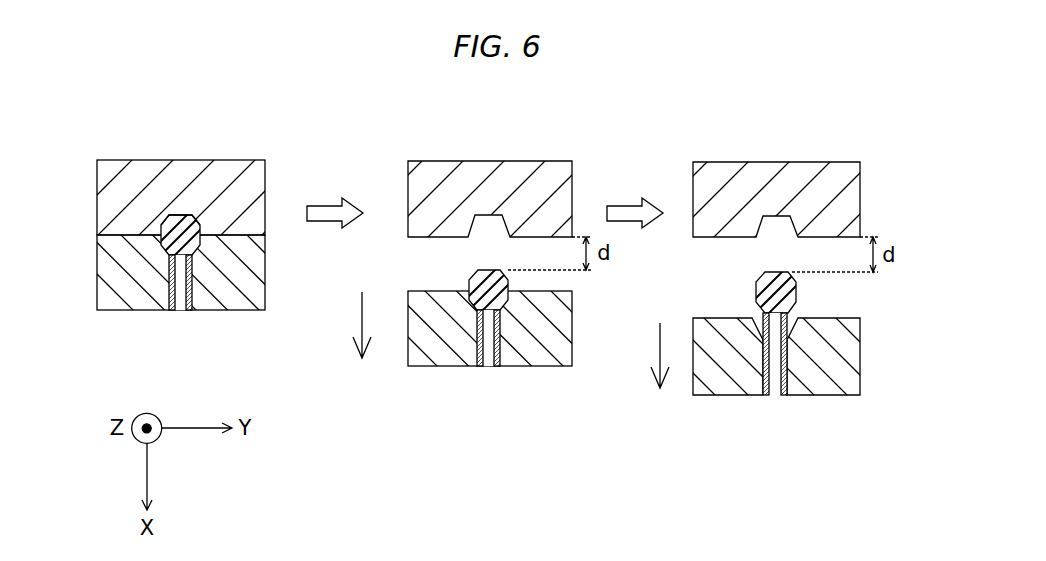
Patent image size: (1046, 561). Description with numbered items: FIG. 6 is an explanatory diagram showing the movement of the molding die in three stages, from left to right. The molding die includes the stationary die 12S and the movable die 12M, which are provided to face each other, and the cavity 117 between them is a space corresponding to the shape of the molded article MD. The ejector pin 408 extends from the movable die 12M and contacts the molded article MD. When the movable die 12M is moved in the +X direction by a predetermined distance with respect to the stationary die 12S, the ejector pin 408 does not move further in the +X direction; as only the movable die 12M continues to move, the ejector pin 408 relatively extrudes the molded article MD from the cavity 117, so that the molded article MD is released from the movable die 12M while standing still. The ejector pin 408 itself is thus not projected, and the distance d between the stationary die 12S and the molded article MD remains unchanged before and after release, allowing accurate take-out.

The stationary die 12S is at (257, 195).
The movable die 12M is at (257, 287).
The molded article MD is at (197, 222).
The ejector pin 408 is at (193, 283).
The cavity 117 is at (174, 215).